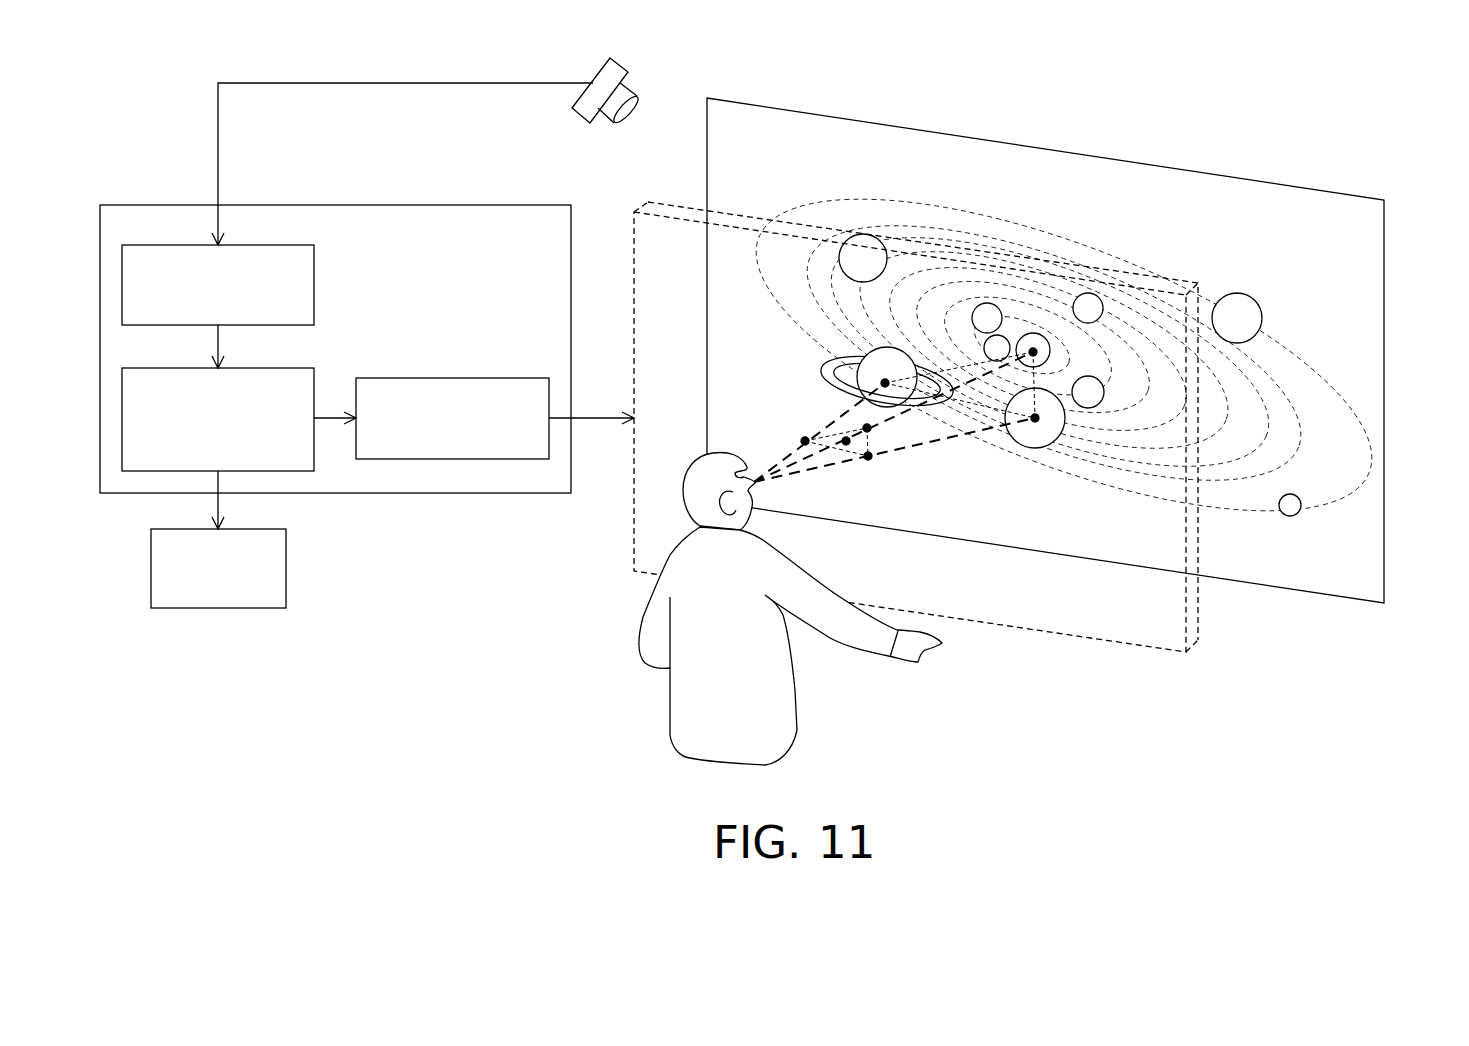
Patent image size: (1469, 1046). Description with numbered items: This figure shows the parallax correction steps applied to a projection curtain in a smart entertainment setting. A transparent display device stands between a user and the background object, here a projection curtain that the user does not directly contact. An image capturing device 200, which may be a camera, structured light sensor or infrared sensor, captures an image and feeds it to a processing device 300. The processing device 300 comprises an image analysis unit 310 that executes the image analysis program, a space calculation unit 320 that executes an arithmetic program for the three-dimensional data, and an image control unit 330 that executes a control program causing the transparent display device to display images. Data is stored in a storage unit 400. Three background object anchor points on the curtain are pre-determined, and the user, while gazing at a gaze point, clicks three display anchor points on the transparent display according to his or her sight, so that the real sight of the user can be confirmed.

The image capturing device 200 is at (613, 72).
The processing device 300 is at (567, 238).
The image analysis unit 310 is at (264, 314).
The space calculation unit 320 is at (239, 463).
The image control unit 330 is at (498, 446).
The storage unit 400 is at (280, 595).